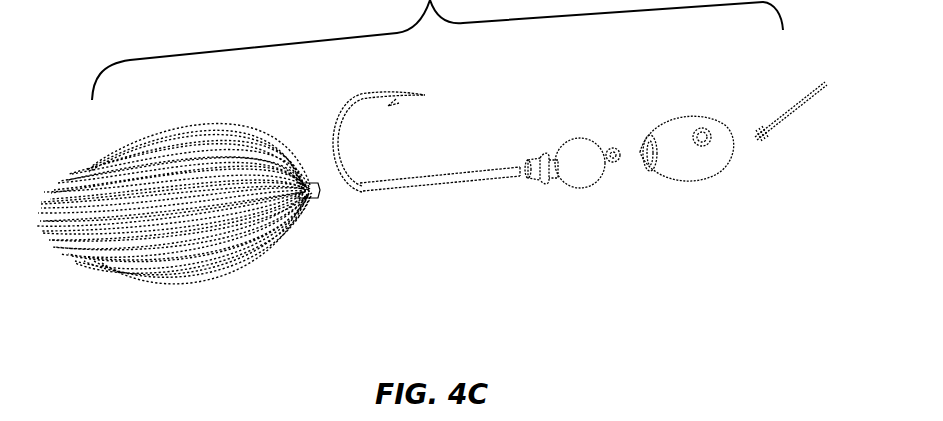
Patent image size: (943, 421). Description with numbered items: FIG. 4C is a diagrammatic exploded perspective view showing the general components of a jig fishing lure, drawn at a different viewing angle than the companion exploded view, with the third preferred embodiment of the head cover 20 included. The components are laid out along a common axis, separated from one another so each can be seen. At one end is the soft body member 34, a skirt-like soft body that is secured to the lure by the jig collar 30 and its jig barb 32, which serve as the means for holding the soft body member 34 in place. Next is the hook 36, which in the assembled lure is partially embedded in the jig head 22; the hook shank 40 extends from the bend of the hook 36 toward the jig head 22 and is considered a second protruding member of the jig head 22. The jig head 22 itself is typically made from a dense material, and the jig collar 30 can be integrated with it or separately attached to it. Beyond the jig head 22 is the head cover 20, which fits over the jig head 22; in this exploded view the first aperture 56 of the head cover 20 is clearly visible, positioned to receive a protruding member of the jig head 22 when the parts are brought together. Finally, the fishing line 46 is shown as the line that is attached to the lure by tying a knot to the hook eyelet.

The head cover 20 is at (682, 157).
The jig head 22 is at (587, 170).
The jig collar 30 is at (553, 167).
The jig barb 32 is at (545, 185).
The soft body member 34 is at (313, 233).
The hook 36 is at (357, 182).
The hook shank 40 is at (473, 177).
The fishing line 46 is at (790, 115).
The first aperture 56 is at (653, 150).